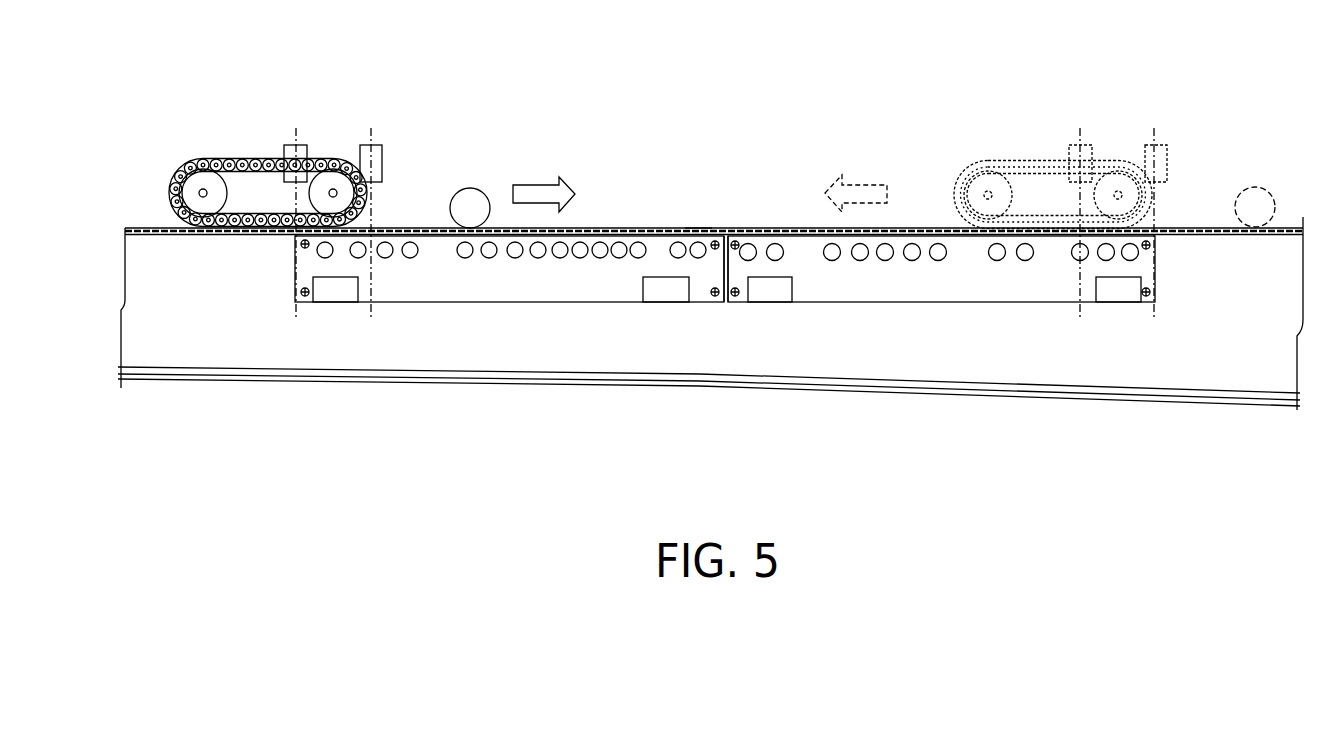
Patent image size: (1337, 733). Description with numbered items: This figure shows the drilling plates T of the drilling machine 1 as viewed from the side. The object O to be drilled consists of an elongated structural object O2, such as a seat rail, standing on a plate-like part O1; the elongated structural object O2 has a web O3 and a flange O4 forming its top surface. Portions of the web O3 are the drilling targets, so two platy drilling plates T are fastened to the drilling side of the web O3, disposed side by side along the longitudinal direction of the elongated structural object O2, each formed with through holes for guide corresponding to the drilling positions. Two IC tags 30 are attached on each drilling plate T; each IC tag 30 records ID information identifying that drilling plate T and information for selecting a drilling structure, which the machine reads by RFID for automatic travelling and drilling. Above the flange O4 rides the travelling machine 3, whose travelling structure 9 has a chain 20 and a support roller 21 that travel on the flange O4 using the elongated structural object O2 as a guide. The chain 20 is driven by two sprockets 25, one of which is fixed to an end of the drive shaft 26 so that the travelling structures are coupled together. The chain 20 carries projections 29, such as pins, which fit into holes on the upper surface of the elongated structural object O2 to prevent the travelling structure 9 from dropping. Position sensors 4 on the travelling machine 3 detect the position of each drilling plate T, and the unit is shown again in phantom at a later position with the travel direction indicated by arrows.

The drilling machine 1 is at (270, 155).
The travelling machine 3 is at (241, 195).
The position sensor 4 is at (302, 140).
The travelling structure 9 is at (241, 161).
The chain 20 is at (242, 160).
The support roller 21 is at (477, 188).
The sprocket 25 is at (288, 233).
The drive shaft 26 is at (333, 189).
The projection 29 is at (196, 159).
The IC tag 30 is at (347, 291).
The drilling plate T is at (743, 285).
The object to be drilled O is at (710, 298).
The plate-like part O1 is at (273, 380).
The elongated structural object O2 is at (619, 222).
The web O3 is at (365, 360).
The flange O4 is at (697, 228).